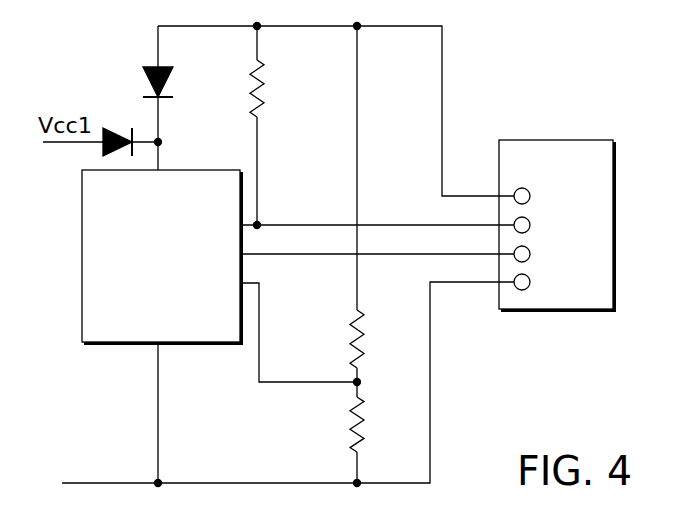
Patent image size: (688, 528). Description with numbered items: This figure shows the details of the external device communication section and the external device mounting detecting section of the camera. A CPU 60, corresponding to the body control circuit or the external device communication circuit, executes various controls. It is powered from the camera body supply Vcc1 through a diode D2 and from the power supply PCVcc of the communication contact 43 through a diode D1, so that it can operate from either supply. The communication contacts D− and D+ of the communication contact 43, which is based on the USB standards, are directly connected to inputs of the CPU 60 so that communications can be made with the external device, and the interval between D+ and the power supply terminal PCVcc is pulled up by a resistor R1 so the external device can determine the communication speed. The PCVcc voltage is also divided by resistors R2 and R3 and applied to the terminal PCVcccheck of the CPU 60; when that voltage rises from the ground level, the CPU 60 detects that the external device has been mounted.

The communication contact 43 is at (557, 140).
The CPU 60 is at (113, 345).
The diode D1 is at (177, 82).
The diode D2 is at (119, 127).
The resistor R1 is at (274, 88).
The resistor R2 is at (376, 339).
The resistor R3 is at (376, 424).